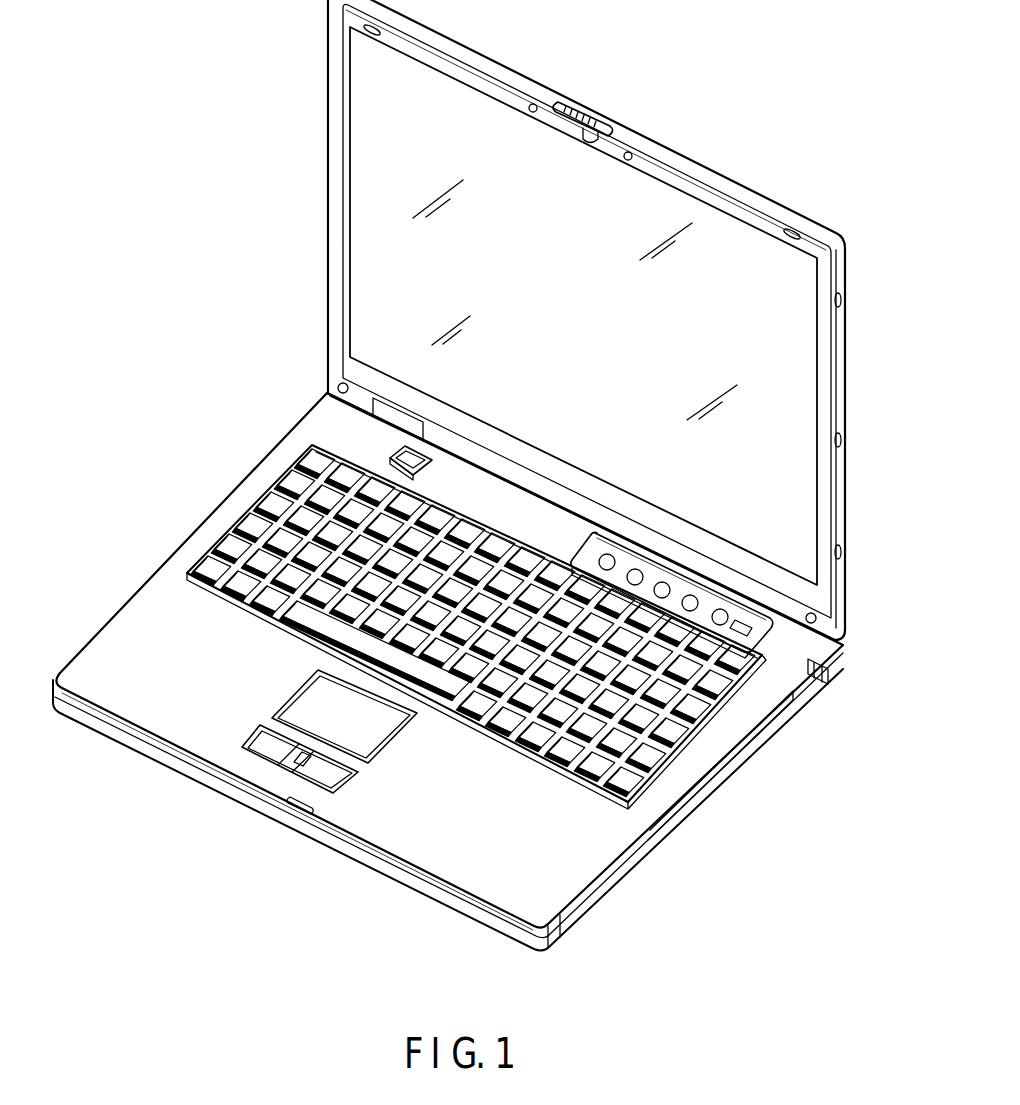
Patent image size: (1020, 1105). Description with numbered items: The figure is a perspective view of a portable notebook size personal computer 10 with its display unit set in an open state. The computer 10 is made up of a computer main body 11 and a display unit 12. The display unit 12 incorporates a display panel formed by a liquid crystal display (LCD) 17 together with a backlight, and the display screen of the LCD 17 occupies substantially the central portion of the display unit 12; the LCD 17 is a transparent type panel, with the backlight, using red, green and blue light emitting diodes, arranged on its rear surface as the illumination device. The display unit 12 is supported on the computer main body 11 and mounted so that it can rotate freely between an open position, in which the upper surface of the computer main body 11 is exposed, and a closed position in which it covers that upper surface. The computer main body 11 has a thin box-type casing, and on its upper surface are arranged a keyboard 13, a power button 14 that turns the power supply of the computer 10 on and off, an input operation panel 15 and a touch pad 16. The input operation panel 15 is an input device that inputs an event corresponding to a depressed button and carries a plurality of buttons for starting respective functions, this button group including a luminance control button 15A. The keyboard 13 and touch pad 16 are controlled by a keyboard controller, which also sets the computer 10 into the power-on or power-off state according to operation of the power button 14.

The portable notebook size personal computer 10 is at (810, 791).
The computer main body 11 is at (608, 890).
The display unit 12 is at (848, 471).
The keyboard 13 is at (622, 748).
The power button 14 is at (392, 455).
The input operation panel 15 is at (679, 588).
The luminance control button 15A is at (721, 610).
The touch pad 16 is at (370, 745).
The liquid crystal display (LCD) 17 is at (808, 335).